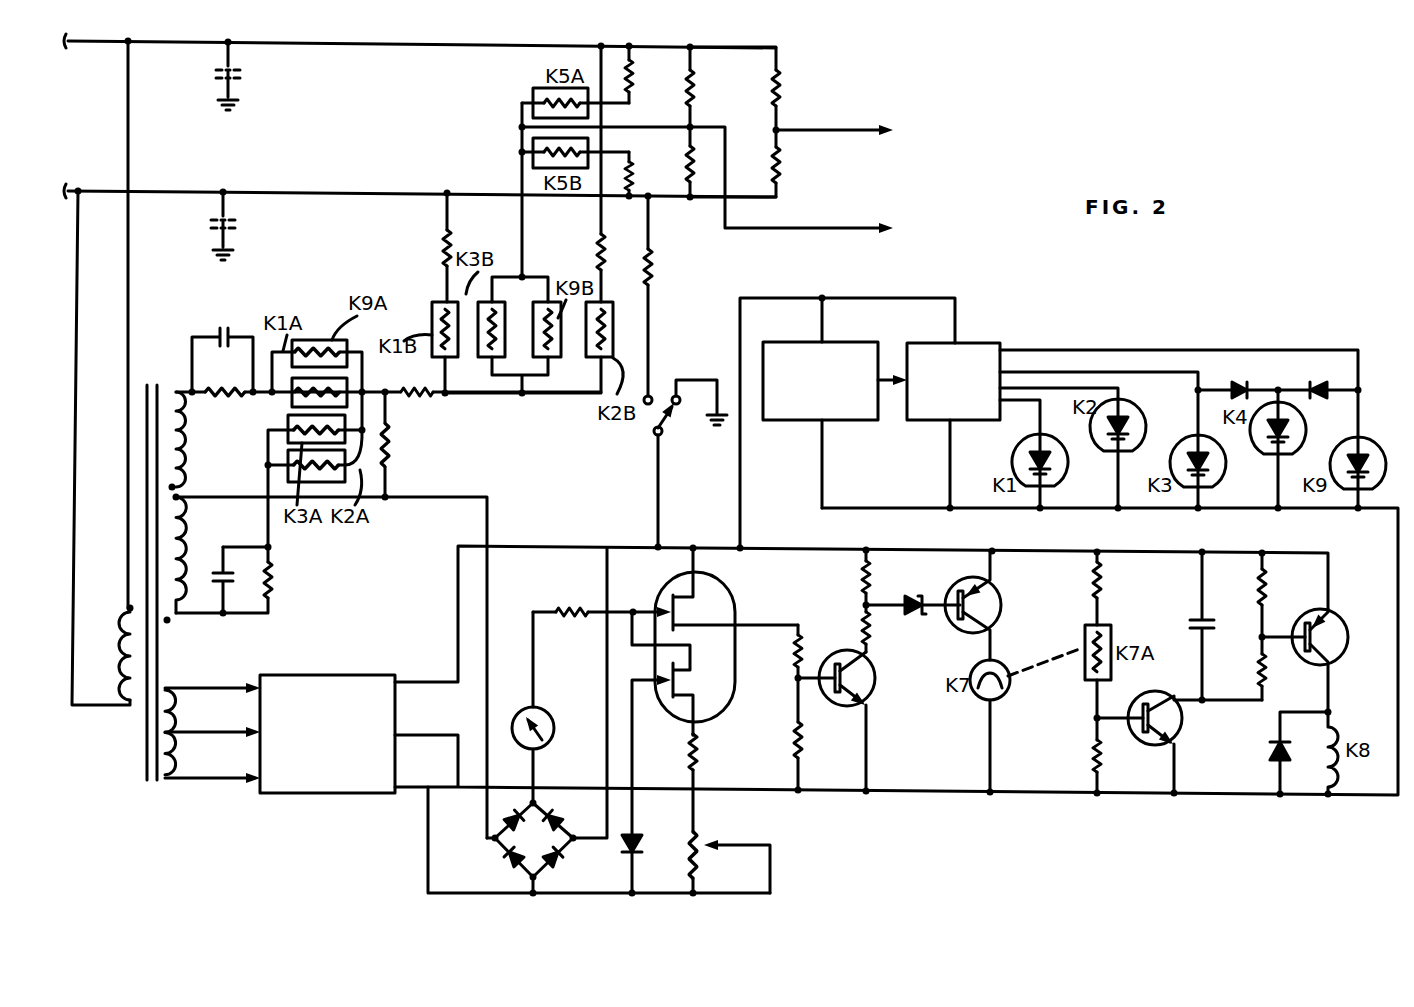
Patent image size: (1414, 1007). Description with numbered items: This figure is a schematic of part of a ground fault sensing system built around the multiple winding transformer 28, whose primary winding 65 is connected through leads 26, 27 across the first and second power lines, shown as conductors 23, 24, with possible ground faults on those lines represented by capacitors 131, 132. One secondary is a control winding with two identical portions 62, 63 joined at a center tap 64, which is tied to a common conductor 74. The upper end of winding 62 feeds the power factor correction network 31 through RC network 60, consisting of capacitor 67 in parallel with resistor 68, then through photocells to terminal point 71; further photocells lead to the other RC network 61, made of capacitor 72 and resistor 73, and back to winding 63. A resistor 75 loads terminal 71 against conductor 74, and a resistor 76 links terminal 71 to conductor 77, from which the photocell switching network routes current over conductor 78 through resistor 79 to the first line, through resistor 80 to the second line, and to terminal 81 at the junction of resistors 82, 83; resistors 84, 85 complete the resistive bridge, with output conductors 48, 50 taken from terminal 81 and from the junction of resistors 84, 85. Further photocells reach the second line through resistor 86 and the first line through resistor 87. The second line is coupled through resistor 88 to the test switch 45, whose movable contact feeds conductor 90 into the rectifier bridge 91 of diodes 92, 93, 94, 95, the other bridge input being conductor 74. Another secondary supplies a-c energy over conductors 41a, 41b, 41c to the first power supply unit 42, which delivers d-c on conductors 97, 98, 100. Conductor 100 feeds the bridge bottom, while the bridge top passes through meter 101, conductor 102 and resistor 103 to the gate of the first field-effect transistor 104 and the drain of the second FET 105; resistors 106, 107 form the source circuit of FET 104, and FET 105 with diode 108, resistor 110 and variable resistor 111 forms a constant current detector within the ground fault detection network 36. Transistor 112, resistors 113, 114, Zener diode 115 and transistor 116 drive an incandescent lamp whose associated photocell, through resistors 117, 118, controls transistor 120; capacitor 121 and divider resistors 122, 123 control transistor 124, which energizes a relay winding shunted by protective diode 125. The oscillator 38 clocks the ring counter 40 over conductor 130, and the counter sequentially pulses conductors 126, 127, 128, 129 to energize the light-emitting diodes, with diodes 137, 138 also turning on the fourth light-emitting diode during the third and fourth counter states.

The line 1 conductor 23 is at (437, 43).
The line 2 conductor 24 is at (402, 193).
The primary lead 26 is at (128, 262).
The primary lead 27 is at (75, 470).
The multiple winding transformer 28 is at (160, 804).
The power factor correction network 31 is at (240, 535).
The ground fault detection network 36 is at (981, 855).
The oscillator 38 is at (820, 403).
The ring counter 40 is at (953, 413).
The conductor 41a is at (212, 720).
The conductor 41b is at (212, 723).
The conductor 41c is at (212, 769).
The first power supply unit 42 is at (327, 722).
The test switch 45 is at (672, 394).
The output conductor 48 is at (846, 228).
The output conductor 50 is at (840, 130).
The RC network 60 is at (185, 324).
The RC network 61 is at (322, 630).
The control winding portion 62 is at (185, 432).
The control winding portion 63 is at (182, 560).
The center tap 64 is at (183, 497).
The primary winding 65 is at (109, 656).
The capacitor 67 is at (222, 350).
The resistor 68 is at (223, 379).
The terminal point 71 is at (389, 400).
The capacitor 72 is at (212, 582).
The resistor 73 is at (241, 579).
The common conductor 74 is at (455, 497).
The resistor 75 is at (400, 446).
The resistor 76 is at (417, 379).
The conductor 77 is at (460, 394).
The conductor 78 is at (508, 192).
The resistor 79 is at (645, 74).
The resistor 80 is at (645, 174).
The terminal 81 is at (696, 126).
The resistor 82 is at (705, 89).
The resistor 83 is at (688, 166).
The resistor 84 is at (752, 90).
The resistor 85 is at (752, 163).
The resistor 86 is at (432, 247).
The resistor 87 is at (586, 174).
The resistor 88 is at (663, 300).
The conductor 90 is at (650, 500).
The rectifier bridge 91 is at (547, 720).
The diode 92 is at (564, 812).
The diode 93 is at (503, 812).
The diode 94 is at (501, 862).
The diode 95 is at (564, 862).
The conductor 97 is at (872, 286).
The conductor 98 is at (1147, 817).
The conductor 100 is at (585, 828).
The meter 101 is at (513, 728).
The conductor 102 is at (534, 672).
The resistor 103 is at (585, 600).
The first field-effect transistor 104 is at (713, 635).
The second field-effect transistor 105 is at (662, 752).
The resistor 106 is at (780, 653).
The resistor 107 is at (780, 734).
The diode 108 is at (652, 848).
The resistor 110 is at (713, 783).
The variable resistor 111 is at (729, 855).
The NPN transistor 112 is at (858, 720).
The resistor 113 is at (850, 627).
The resistor 114 is at (849, 577).
The Zener diode 115 is at (913, 594).
The PNP transistor 116 is at (993, 605).
The resistor 117 is at (1119, 588).
The resistor 118 is at (1081, 754).
The NPN transistor 120 is at (1179, 742).
The capacitor 121 is at (1220, 626).
The resistor 122 is at (1285, 597).
The resistor 123 is at (1242, 669).
The PNP transistor 124 is at (1325, 662).
The protective diode 125 is at (1282, 753).
The conductor 126 is at (1022, 404).
The conductor 127 is at (1060, 350).
The conductor 128 is at (1128, 372).
The conductor 129 is at (1208, 350).
The conductor 130 is at (891, 370).
The ground fault 131 is at (248, 76).
The ground fault 132 is at (243, 226).
The diode 137 is at (1253, 378).
The diode 138 is at (1331, 378).